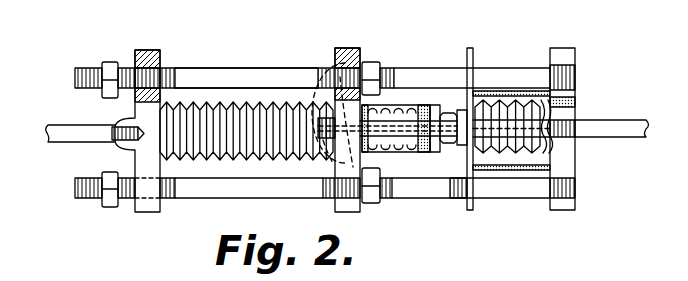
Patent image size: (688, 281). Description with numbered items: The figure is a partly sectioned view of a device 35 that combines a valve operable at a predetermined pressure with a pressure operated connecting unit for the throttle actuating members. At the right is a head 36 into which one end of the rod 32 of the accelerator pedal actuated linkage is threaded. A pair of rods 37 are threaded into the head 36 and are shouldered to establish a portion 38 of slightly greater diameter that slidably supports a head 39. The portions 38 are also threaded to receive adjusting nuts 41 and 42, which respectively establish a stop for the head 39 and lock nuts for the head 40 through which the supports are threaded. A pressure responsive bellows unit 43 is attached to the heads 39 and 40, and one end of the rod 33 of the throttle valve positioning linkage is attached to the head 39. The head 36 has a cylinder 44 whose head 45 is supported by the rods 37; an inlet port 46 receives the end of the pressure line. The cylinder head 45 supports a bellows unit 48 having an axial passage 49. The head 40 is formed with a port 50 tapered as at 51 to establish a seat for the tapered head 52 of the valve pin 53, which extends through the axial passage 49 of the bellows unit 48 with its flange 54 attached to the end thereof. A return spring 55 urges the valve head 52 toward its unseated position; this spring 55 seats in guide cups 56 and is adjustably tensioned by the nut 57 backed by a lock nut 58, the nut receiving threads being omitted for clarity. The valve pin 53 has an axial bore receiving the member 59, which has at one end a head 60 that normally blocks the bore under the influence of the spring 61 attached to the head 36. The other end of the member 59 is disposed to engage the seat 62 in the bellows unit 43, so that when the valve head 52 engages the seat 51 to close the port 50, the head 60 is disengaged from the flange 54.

The rod 32 is at (603, 127).
The rod 33 is at (66, 139).
The device 35 is at (279, 66).
The head 36 is at (577, 148).
The rods 37 is at (418, 69).
The portion 38 is at (223, 77).
The head 39 is at (157, 50).
The head 40 is at (351, 48).
The adjusting nuts 41 is at (110, 67).
The adjusting nuts 42 is at (373, 62).
The bellows unit 43 is at (243, 117).
The cylinder 44 is at (528, 170).
The cylinder head 45 is at (476, 73).
The inlet port 46 is at (578, 100).
The bellows unit 48 is at (500, 152).
The axial passage 49 is at (482, 171).
The port 50 is at (321, 65).
The tapered seat 51 is at (335, 205).
The tapered head 52 is at (407, 142).
The valve pin 53 is at (463, 110).
The flange 54 is at (563, 210).
The return spring 55 is at (426, 152).
The guide cups 56 is at (376, 108).
The nut 57 is at (435, 152).
The lock nut 58 is at (458, 184).
The member 59 is at (333, 152).
The head 60 is at (543, 83).
The spring 61 is at (553, 150).
The seat 62 is at (317, 133).